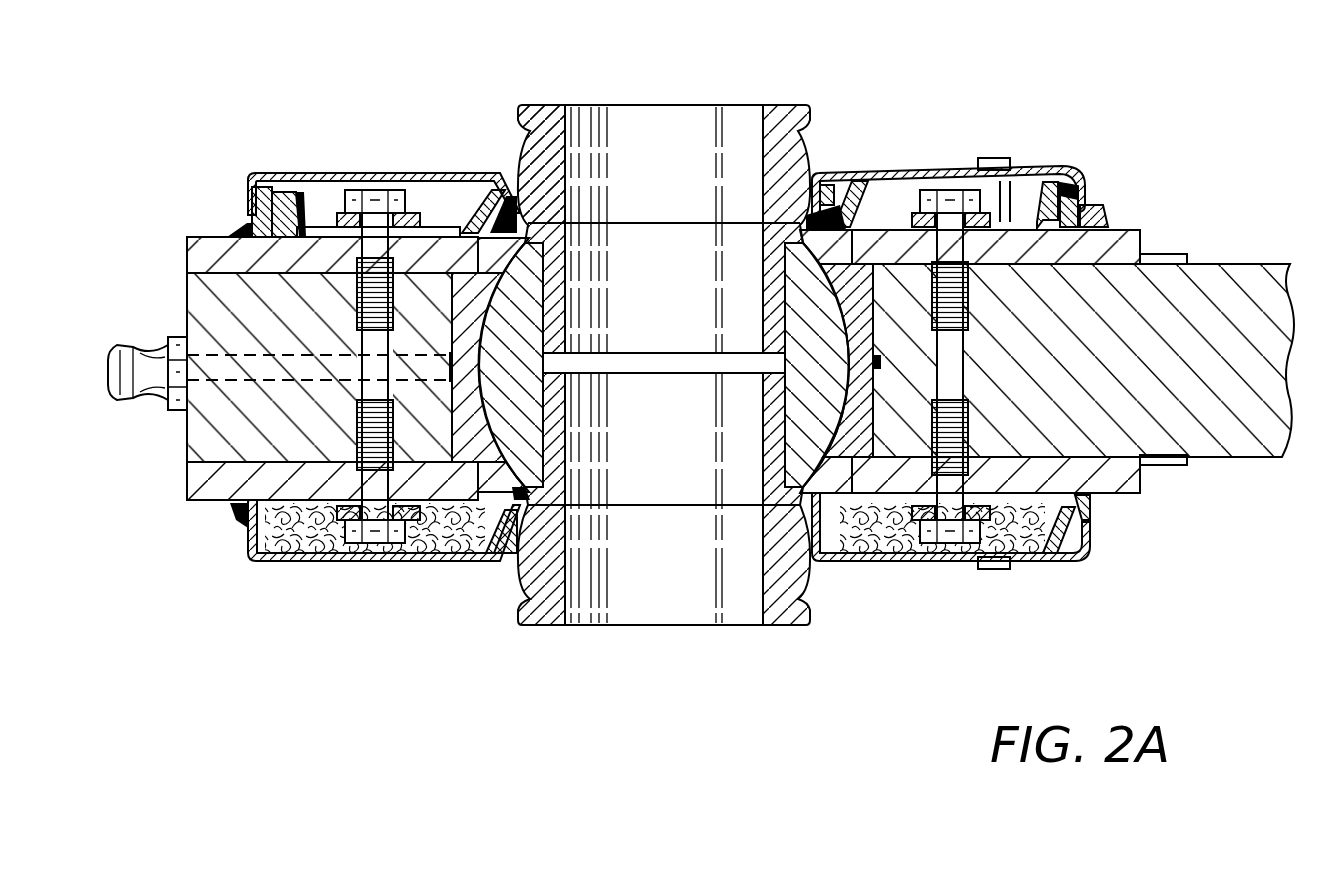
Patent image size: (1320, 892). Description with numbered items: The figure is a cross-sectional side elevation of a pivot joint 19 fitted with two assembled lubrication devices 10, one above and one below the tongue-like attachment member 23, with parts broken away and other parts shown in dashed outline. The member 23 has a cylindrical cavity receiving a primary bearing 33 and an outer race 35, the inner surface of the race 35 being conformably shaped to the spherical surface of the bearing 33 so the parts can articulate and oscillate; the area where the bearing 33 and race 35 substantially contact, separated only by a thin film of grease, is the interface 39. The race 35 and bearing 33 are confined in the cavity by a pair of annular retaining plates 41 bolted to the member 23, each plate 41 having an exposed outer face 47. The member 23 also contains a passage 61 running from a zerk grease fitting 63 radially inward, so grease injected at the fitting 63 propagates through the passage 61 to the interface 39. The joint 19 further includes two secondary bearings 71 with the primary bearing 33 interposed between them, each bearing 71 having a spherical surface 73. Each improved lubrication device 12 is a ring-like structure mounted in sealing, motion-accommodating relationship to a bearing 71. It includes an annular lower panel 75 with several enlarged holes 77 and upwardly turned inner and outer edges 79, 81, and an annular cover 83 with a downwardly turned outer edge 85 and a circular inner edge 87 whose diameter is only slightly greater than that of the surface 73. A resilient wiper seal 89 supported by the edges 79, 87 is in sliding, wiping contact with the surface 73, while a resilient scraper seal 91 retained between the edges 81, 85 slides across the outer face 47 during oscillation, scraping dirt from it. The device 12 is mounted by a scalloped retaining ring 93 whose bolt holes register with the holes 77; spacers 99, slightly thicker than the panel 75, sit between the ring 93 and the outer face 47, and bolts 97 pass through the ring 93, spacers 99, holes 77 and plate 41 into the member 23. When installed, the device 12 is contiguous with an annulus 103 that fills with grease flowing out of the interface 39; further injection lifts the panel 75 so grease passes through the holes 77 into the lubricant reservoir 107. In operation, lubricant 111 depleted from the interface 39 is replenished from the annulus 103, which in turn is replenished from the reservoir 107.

The lubrication device 10 is at (940, 120).
The improved lubrication device 12 is at (912, 560).
The joint 19 is at (498, 585).
The attachment member 23 is at (1205, 262).
The primary bearing 33 is at (520, 320).
The outer race 35 is at (505, 458).
The interface 39 is at (505, 412).
The retaining plates 41 is at (200, 255).
The outer face 47 is at (215, 237).
The passage 61 is at (245, 385).
The zerk grease fitting 63 is at (140, 395).
The secondary bearing 71 is at (768, 107).
The spherical surface 73 is at (800, 145).
The lower panel 75 is at (1020, 223).
The enlarged holes 77 is at (310, 213).
The inner edge 79 is at (490, 185).
The outer edge 81 is at (297, 190).
The cover 83 is at (372, 177).
The outer edge 85 is at (1065, 188).
The inner edge 87 is at (810, 172).
The wiper seal 89 is at (520, 198).
The scraper seal 91 is at (1095, 223).
The retaining ring 93 is at (417, 213).
The bolts 97 is at (952, 190).
The spacers 99 is at (255, 273).
The annulus 103 is at (473, 557).
The lubricant reservoir 107 is at (318, 550).
The lubricant 111 is at (1047, 557).